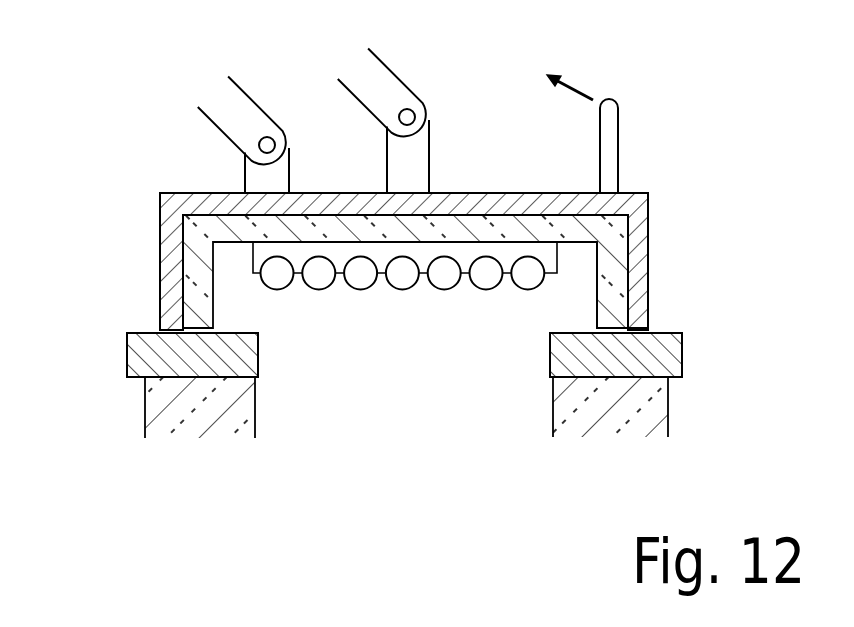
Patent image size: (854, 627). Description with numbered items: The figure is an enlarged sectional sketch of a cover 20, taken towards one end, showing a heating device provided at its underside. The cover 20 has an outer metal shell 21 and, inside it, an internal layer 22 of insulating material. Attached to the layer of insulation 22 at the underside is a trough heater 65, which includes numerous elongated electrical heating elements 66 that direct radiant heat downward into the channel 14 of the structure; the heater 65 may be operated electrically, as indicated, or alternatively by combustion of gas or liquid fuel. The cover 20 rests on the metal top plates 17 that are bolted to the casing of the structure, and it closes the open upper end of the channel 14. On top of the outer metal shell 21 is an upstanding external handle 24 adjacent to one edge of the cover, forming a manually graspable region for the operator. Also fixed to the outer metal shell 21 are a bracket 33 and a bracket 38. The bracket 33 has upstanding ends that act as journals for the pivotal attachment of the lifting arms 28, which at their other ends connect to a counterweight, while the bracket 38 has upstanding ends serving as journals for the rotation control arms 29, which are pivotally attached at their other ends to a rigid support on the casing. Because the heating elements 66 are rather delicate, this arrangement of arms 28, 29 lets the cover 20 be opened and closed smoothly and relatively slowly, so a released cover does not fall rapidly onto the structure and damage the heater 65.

The channel 14 is at (440, 451).
The metal top plates 17 is at (130, 350).
The cover 20 is at (648, 205).
The outer metal shell 21 is at (200, 273).
The internal layer of insulating material 22 is at (645, 266).
The external handle 24 is at (608, 148).
The lifting arms 28 is at (390, 78).
The rotation control arms 29 is at (237, 100).
The bracket 33 is at (415, 165).
The bracket 38 is at (257, 177).
The trough heater 65 is at (410, 342).
The electrical heating elements 66 is at (277, 285).